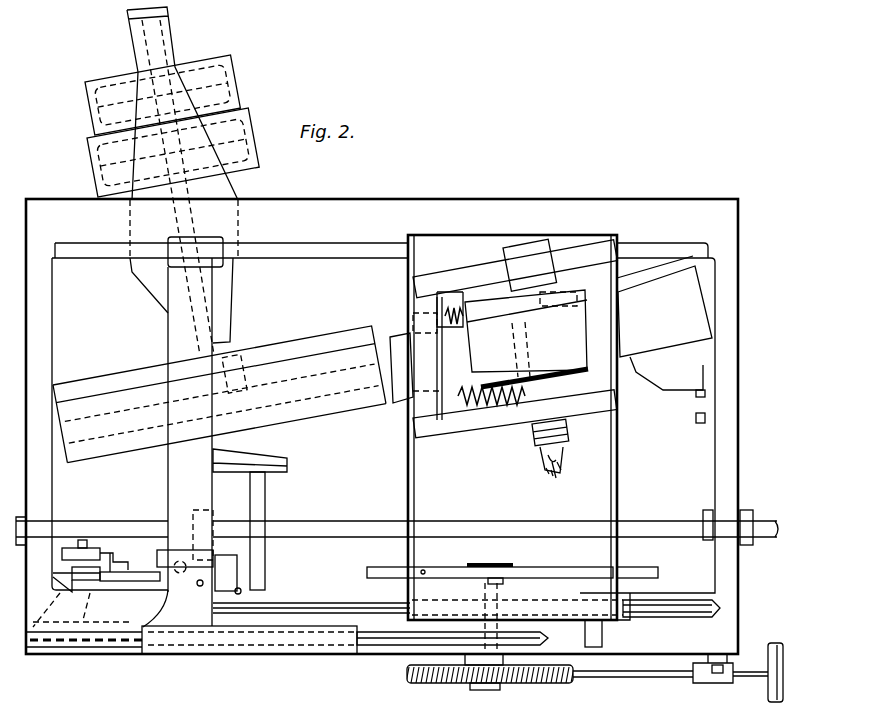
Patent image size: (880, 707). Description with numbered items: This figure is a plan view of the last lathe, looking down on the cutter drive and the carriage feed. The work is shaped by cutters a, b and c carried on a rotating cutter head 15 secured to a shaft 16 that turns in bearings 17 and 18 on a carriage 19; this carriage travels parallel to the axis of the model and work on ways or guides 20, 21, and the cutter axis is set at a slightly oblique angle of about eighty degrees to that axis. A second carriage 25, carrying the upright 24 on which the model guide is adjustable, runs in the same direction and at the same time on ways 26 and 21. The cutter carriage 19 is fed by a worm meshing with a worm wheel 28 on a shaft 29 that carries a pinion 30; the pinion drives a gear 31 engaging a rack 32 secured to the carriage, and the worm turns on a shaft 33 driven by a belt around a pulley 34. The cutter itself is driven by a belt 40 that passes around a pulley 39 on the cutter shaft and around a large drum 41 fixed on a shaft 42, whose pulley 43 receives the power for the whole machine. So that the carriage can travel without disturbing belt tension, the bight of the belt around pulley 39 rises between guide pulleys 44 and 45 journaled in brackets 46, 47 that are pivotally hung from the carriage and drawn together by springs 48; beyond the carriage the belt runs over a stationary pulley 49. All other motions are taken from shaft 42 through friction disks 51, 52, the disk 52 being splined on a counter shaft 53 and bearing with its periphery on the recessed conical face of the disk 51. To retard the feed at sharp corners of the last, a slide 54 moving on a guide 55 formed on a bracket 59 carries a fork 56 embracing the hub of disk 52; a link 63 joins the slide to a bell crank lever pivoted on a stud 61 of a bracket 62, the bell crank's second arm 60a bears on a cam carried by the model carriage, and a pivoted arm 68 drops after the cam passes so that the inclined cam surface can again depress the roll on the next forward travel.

The cutter head 15 is at (567, 442).
The shaft 16 is at (513, 340).
The bearing 17 is at (521, 270).
The bearing 18 is at (531, 410).
The carriage 19 is at (606, 477).
The way 20 is at (312, 606).
The way 21 is at (363, 258).
The upright 24 is at (497, 690).
The carriage 25 is at (168, 352).
The way 26 is at (385, 642).
The worm wheel 28 is at (451, 686).
The shaft 29 is at (496, 567).
The pinion 30 is at (520, 568).
The gear 31 is at (482, 567).
The rack 32 is at (656, 577).
The shaft 33 is at (636, 676).
The pulley 34 is at (778, 645).
The pulley 39 is at (547, 368).
The belt 40 is at (366, 406).
The drum 41 is at (293, 347).
The shaft 42 is at (241, 365).
The pulley 43 is at (261, 110).
The guide pulley 44 is at (398, 338).
The guide pulley 45 is at (624, 328).
The bracket 46 is at (450, 407).
The bracket 47 is at (573, 378).
The spring 48 is at (448, 310).
The stationary pulley 49 is at (647, 362).
The friction disk 51 is at (288, 460).
The friction disk 52 is at (258, 513).
The counter shaft 53 is at (365, 530).
The slide 54 is at (242, 577).
The guide 55 is at (245, 590).
The fork 56 is at (195, 525).
The bracket 59 is at (173, 606).
The second arm 60a is at (163, 562).
The stud 61 is at (82, 548).
The bracket 62 is at (80, 586).
The link 63 is at (132, 568).
The pivoted arm 68 is at (104, 556).
The cutter a is at (553, 478).
The cutter b is at (562, 458).
The cutter c is at (545, 472).